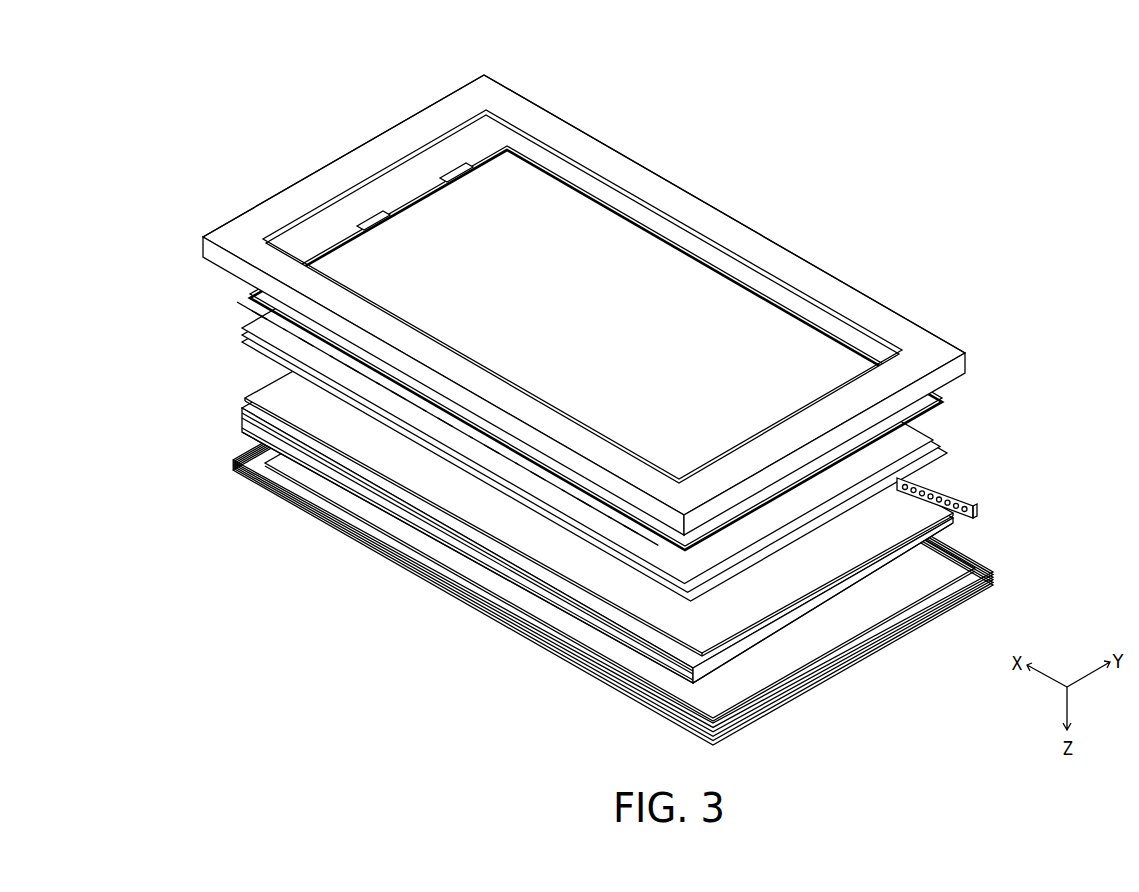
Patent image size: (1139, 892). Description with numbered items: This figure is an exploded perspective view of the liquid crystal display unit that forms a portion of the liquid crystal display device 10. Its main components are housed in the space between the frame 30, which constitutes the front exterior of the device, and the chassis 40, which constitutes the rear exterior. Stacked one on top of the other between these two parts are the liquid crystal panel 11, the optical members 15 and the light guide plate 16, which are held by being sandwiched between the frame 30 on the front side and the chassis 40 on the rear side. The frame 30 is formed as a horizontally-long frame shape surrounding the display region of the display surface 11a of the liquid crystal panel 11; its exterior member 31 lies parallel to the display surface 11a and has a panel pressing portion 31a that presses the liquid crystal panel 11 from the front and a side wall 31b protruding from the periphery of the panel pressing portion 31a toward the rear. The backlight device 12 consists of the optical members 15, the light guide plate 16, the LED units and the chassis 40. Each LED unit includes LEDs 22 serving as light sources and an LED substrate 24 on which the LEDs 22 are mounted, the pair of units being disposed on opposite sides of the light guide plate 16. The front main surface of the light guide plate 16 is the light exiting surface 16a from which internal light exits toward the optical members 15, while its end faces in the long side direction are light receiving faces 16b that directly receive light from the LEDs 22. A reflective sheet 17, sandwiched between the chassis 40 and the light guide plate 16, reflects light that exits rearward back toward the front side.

The liquid crystal display device 10 is at (592, 416).
The liquid crystal panel 11 is at (596, 347).
The display surface 11a is at (718, 310).
The backlight device 12 is at (625, 471).
The optical members 15 is at (946, 457).
The light guide plate 16 is at (598, 501).
The light exiting surface 16a is at (830, 562).
The light receiving faces 16b is at (632, 633).
The reflective sheet 17 is at (907, 553).
The LEDs 22 is at (627, 529).
The LED substrate 24 is at (963, 500).
The frame 30 is at (560, 305).
The exterior member 31 is at (560, 305).
The panel pressing portion 31a is at (594, 148).
The side wall 31b is at (224, 259).
The chassis 40 is at (364, 543).